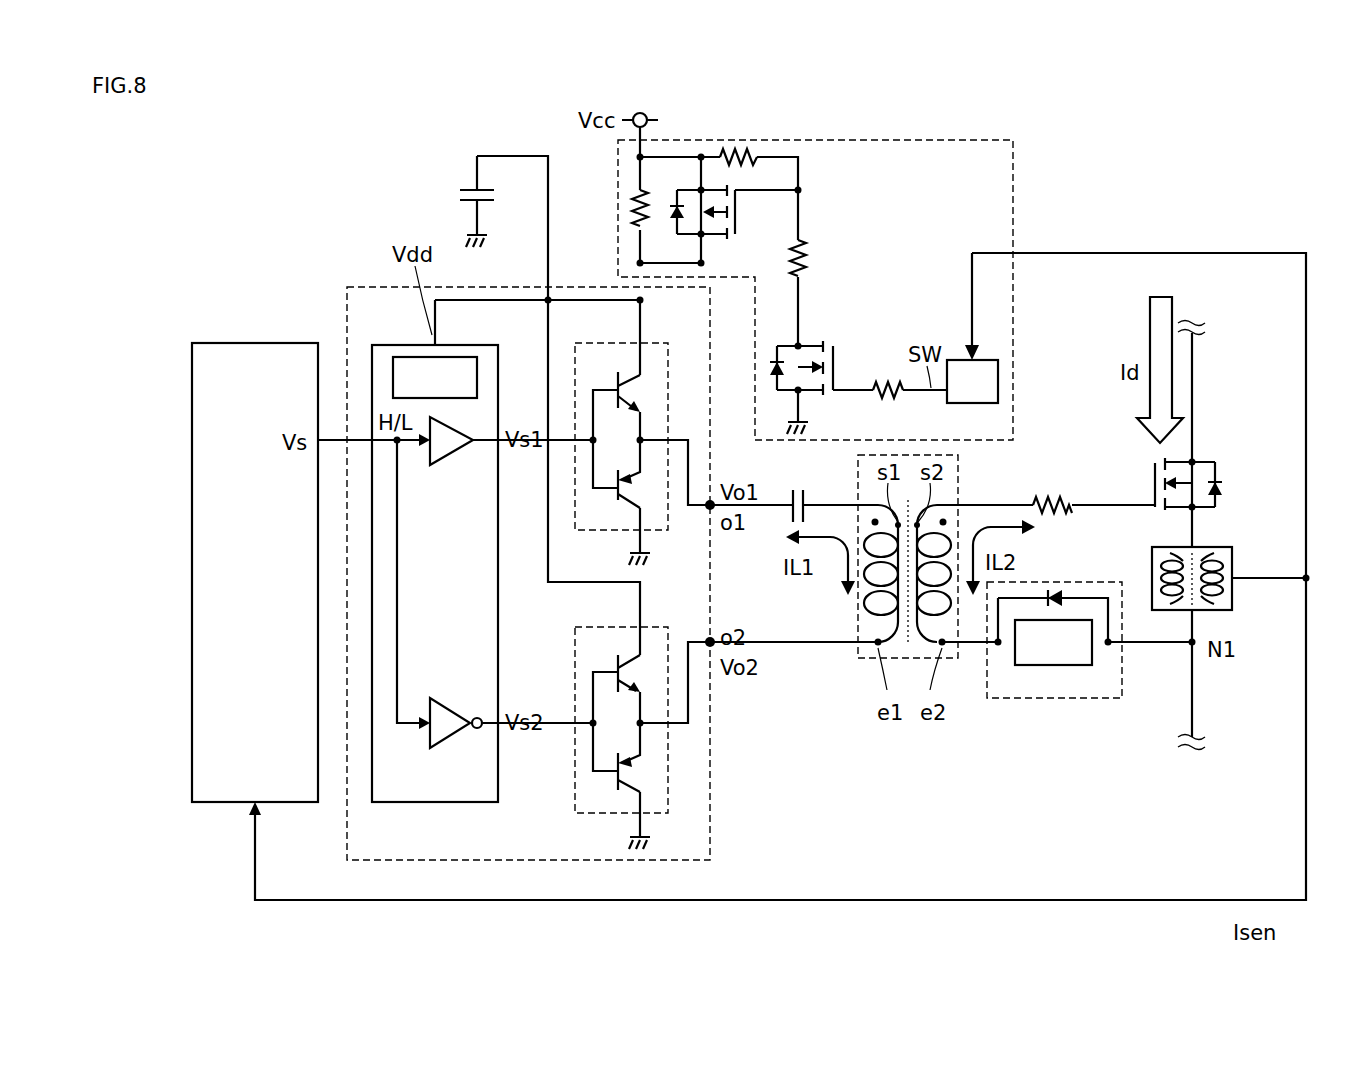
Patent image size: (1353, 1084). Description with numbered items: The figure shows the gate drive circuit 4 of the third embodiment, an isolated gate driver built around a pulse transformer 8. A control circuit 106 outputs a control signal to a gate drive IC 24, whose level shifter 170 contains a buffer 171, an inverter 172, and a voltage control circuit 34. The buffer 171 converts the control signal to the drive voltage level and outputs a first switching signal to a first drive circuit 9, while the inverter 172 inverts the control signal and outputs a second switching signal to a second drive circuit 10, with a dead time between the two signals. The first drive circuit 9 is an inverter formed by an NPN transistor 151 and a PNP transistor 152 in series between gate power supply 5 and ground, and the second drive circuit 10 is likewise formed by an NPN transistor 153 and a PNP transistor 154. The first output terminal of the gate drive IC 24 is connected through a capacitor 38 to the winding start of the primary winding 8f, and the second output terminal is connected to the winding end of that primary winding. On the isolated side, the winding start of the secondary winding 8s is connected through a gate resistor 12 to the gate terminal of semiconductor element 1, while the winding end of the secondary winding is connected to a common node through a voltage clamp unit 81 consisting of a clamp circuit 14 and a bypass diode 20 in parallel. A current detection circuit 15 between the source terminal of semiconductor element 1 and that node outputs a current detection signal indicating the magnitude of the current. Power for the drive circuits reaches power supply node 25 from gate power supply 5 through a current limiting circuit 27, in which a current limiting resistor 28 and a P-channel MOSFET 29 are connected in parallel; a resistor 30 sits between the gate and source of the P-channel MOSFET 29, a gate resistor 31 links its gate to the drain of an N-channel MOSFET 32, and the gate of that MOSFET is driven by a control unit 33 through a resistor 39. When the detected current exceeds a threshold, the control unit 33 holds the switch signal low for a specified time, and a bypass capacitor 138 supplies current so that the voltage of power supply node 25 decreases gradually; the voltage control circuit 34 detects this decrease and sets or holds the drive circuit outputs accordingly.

The gate drive circuit 4 is at (1283, 120).
The gate power supply 5 is at (645, 113).
The current limiting circuit 27 is at (1013, 172).
The resistor 30 is at (733, 152).
The current limiting resistor 28 is at (636, 208).
The P-channel MOSFET 29 is at (738, 222).
The gate resistor 31 is at (806, 258).
The N-channel MOSFET 32 is at (826, 344).
The resistor 39 is at (902, 393).
The control unit 33 is at (998, 382).
The bypass capacitor 138 is at (473, 186).
The power supply node 25 is at (642, 300).
The control circuit 106 is at (255, 343).
The level shifter 170 is at (466, 345).
The voltage control circuit 34 is at (398, 356).
The buffer 171 is at (455, 460).
The inverter 172 is at (455, 742).
The gate drive IC 24 is at (712, 830).
The first drive circuit 9 is at (658, 343).
The NPN transistor 151 is at (616, 378).
The PNP transistor 152 is at (616, 500).
The second drive circuit 10 is at (658, 628).
The NPN transistor 153 is at (616, 660).
The PNP transistor 154 is at (616, 782).
The capacitor 38 is at (800, 490).
The pulse transformer 8 is at (921, 577).
The primary winding 8f is at (872, 648).
The secondary winding 8s is at (955, 648).
The gate resistor 12 is at (1052, 502).
The semiconductor element 1 is at (1208, 460).
The voltage clamp unit 81 is at (1059, 624).
The bypass diode 20 is at (1053, 590).
The clamp circuit 14 is at (1055, 666).
The current detection circuit 15 is at (1234, 566).